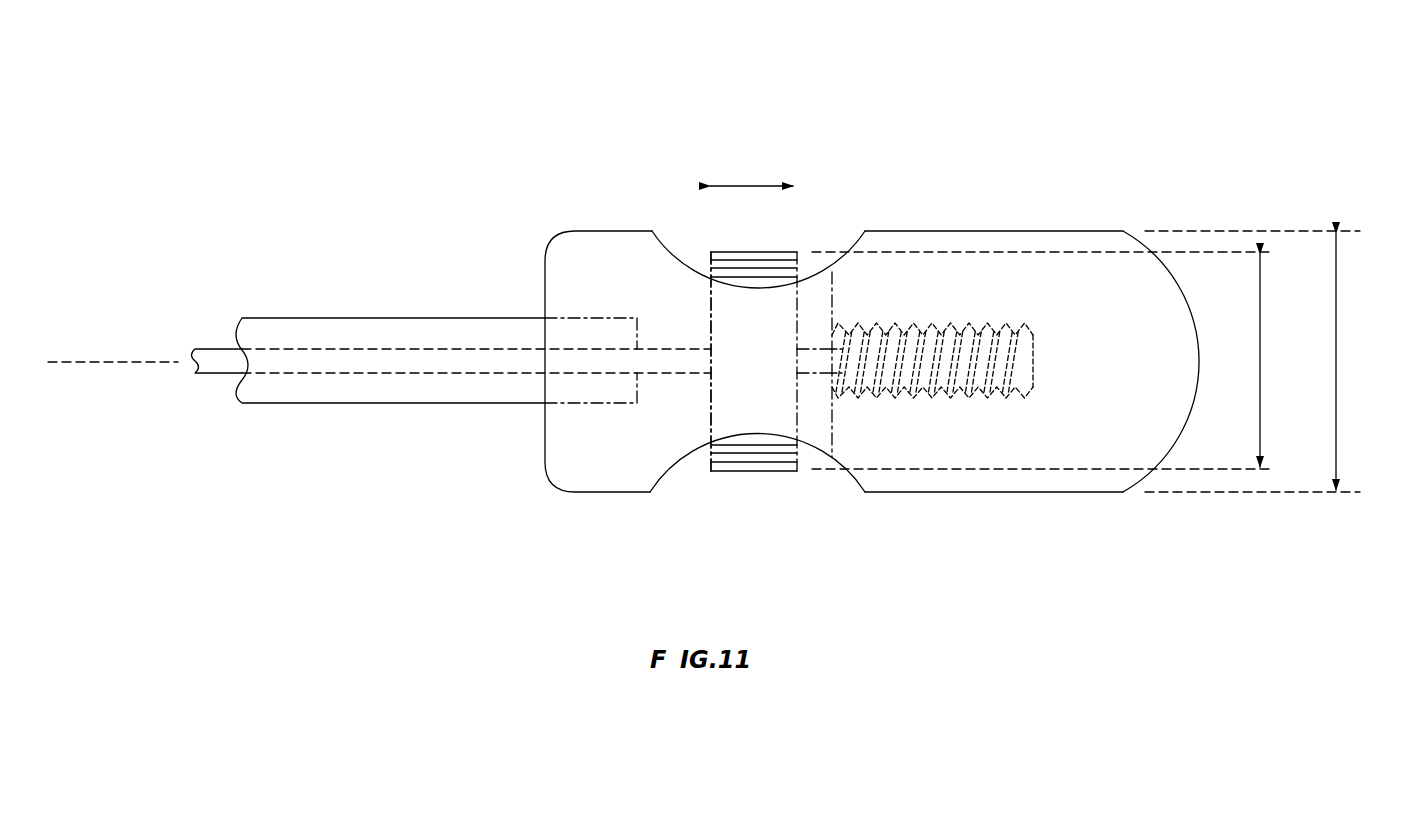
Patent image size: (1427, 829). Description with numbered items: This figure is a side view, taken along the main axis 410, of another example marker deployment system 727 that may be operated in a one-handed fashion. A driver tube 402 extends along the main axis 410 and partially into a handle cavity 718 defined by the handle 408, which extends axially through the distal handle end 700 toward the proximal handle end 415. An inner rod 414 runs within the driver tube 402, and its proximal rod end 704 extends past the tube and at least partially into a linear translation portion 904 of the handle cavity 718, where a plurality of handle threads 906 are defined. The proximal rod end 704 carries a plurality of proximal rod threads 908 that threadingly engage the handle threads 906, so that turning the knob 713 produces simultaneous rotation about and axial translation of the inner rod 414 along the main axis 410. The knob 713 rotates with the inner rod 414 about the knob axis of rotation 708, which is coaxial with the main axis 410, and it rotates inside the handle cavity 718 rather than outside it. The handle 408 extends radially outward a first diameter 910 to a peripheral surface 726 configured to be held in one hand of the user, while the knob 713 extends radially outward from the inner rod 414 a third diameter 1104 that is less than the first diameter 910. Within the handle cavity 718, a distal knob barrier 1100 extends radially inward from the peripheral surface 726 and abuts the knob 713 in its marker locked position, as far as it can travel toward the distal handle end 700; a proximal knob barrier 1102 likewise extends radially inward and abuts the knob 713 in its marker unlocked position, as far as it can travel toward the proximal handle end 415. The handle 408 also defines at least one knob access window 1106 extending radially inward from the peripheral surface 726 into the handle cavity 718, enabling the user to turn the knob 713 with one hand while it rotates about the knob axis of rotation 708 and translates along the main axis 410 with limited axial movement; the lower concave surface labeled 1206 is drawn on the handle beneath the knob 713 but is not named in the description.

The driver tube 402 is at (317, 318).
The inner rod 414 is at (410, 358).
The main axis 410 is at (123, 307).
The knob axis of rotation 708 is at (85, 362).
The distal handle end 700 is at (545, 448).
The distal knob barrier 1100 is at (711, 290).
The proximal knob barrier 1102 is at (832, 296).
The knob 713 is at (720, 250).
The marker deployment system 727 is at (898, 97).
The handle cavity 718 is at (808, 285).
The knob access window 1106 is at (855, 237).
The lower arcuate surface 1206 is at (680, 460).
The handle 408 is at (1025, 207).
The peripheral surface 726 is at (1102, 231).
The proximal handle end 415 is at (1200, 365).
The first diameter 910 is at (1337, 265).
The third diameter 1104 is at (1260, 350).
The linear translation portion 904 is at (1005, 340).
The proximal rod end 704 is at (983, 383).
The handle threads 906 is at (943, 395).
The proximal rod threads 908 is at (878, 380).